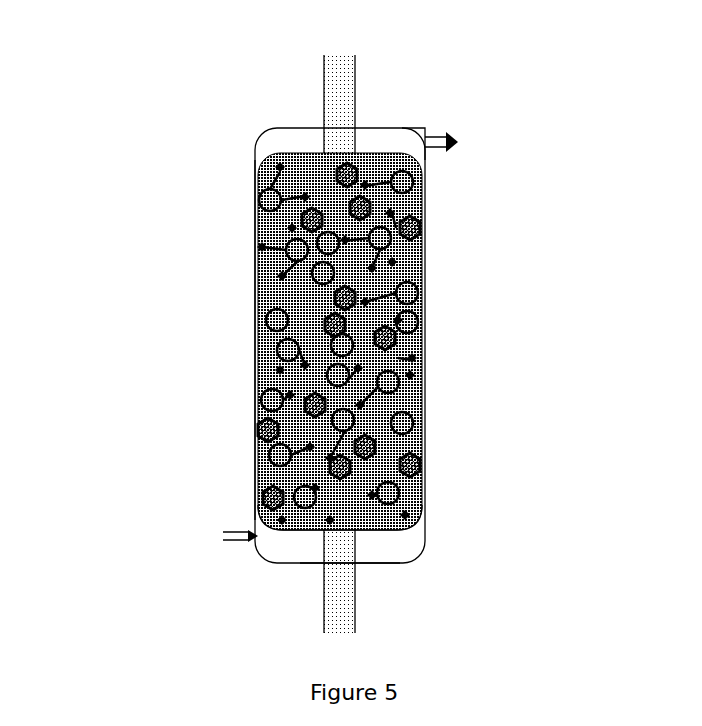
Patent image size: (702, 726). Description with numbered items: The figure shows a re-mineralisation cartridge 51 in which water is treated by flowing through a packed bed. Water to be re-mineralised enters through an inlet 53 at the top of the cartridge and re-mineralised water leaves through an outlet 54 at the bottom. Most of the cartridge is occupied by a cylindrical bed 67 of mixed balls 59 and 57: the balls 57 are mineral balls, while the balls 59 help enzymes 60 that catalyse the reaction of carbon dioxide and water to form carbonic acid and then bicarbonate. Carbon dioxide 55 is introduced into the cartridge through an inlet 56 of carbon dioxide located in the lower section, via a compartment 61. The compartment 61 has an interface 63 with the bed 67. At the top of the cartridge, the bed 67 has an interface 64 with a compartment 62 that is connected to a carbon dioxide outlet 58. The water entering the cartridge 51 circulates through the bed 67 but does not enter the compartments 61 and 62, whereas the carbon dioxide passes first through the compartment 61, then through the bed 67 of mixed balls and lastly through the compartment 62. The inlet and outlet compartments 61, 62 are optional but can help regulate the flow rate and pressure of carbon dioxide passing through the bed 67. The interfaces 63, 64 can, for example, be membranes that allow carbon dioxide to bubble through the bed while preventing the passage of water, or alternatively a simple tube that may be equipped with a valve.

The cartridge 51 is at (309, 300).
The inlet 53 is at (340, 61).
The outlet 54 is at (343, 620).
The carbon dioxide 55 is at (292, 137).
The inlet of carbon dioxide 56 is at (225, 537).
The mineral balls 57 is at (425, 225).
The carbon dioxide outlet 58 is at (447, 140).
The balls 59 is at (405, 295).
The enzymes 60 is at (410, 358).
The compartment 61 is at (387, 547).
The compartment 62 is at (403, 130).
The interface 63 is at (285, 528).
The interface 64 is at (293, 154).
The bed of mixed balls 67 is at (270, 333).